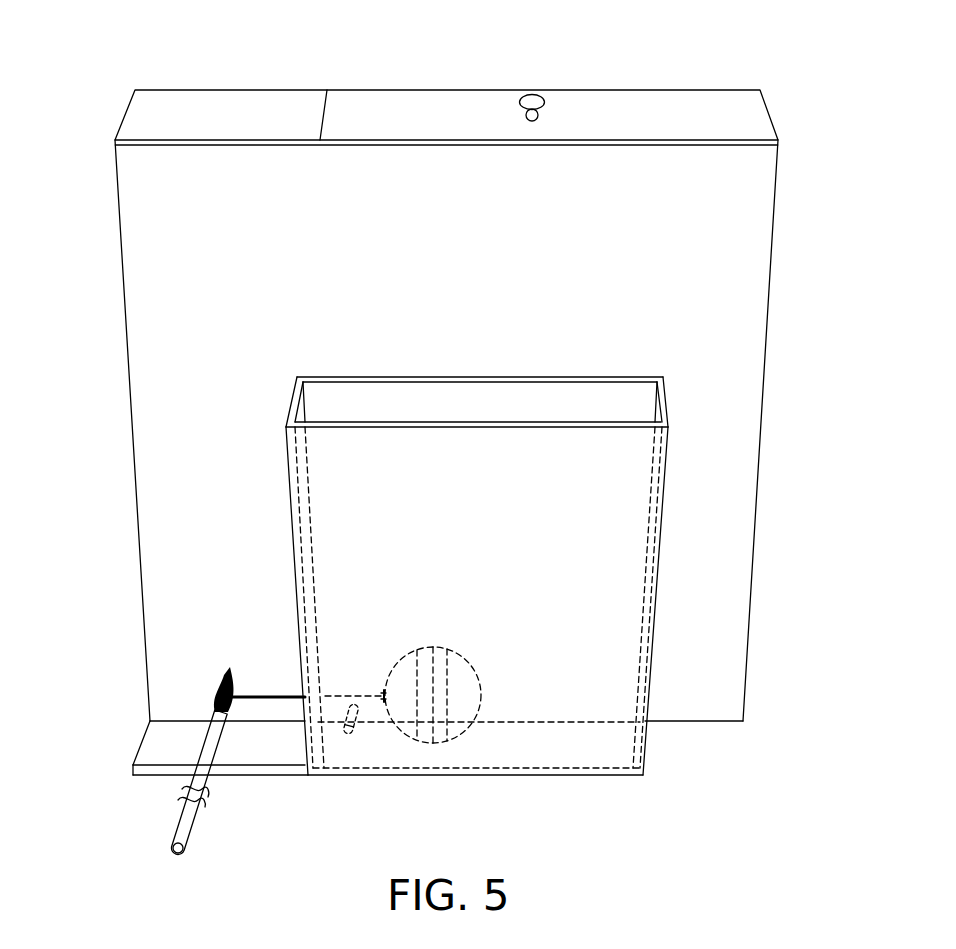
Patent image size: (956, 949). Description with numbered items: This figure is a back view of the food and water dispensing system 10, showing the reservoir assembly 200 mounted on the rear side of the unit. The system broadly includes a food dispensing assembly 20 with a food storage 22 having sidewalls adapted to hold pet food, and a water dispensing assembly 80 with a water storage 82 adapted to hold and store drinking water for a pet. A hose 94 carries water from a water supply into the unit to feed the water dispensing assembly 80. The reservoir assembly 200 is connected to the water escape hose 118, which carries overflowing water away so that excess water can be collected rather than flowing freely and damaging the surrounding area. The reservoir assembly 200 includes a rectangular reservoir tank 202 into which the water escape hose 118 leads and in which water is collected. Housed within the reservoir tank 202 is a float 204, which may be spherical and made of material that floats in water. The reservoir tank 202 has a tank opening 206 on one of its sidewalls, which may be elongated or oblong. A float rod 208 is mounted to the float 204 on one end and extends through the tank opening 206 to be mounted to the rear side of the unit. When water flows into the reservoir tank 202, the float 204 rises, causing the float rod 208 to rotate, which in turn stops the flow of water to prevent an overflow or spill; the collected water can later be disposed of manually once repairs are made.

The food and water dispensing system 10 is at (166, 44).
The food dispensing assembly 20 is at (782, 408).
The food storage 22 is at (728, 512).
The water dispensing assembly 80 is at (118, 391).
The water storage 82 is at (153, 278).
The hose 94 is at (230, 722).
The water escape hose 118 is at (347, 737).
The reservoir assembly 200 is at (660, 745).
The reservoir tank 202 is at (583, 693).
The float 204 is at (440, 728).
The tank opening 206 is at (296, 486).
The float rod 208 is at (290, 697).